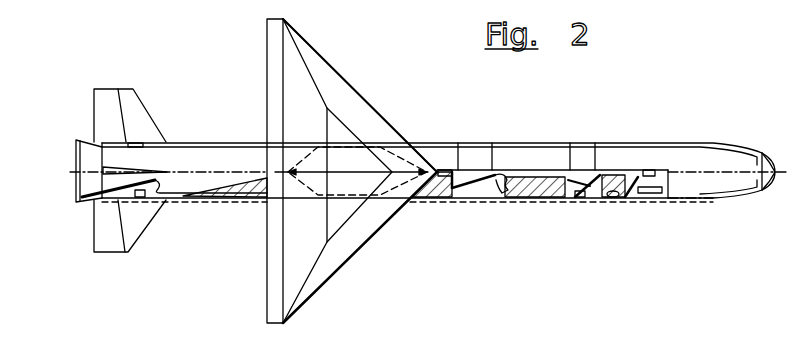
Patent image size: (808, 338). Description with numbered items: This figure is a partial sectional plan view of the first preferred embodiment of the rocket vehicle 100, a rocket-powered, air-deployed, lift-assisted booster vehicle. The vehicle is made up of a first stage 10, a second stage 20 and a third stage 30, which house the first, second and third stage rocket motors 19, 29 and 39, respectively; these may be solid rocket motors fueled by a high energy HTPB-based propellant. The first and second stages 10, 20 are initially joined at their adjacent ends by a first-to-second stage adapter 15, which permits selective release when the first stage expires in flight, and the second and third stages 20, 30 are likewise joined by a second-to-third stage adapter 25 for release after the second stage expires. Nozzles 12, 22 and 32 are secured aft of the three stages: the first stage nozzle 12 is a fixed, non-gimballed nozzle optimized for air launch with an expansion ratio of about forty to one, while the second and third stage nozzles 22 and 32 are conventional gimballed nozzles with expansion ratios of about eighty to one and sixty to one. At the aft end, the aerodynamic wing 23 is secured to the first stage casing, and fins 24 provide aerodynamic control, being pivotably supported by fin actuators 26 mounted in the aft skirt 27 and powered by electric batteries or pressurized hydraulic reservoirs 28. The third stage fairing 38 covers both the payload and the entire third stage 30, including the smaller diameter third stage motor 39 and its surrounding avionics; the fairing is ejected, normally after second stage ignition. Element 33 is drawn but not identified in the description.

The rocket vehicle 100 is at (460, 122).
The first stage 10 is at (233, 203).
The first stage nozzle 12 is at (87, 187).
The 1-2 adapter 15 is at (478, 142).
The first stage rocket motor 19 is at (249, 203).
The second stage 20 is at (535, 200).
The second stage nozzle 22 is at (457, 193).
The aerodynamic wing 23 is at (325, 265).
The fins 24 is at (138, 232).
The 2-3 adapter 25 is at (585, 143).
The fin actuators 26 is at (128, 203).
The aft skirt 27 is at (110, 203).
The electric batteries or pressurized hydraulic reservoirs 28 is at (143, 200).
The second stage rocket motor 29 is at (513, 200).
The third stage 30 is at (702, 200).
The third stage nozzle 32 is at (588, 200).
The pivot 33 is at (615, 200).
The third stage fairing 38 is at (735, 180).
The third stage rocket motor 39 is at (625, 190).